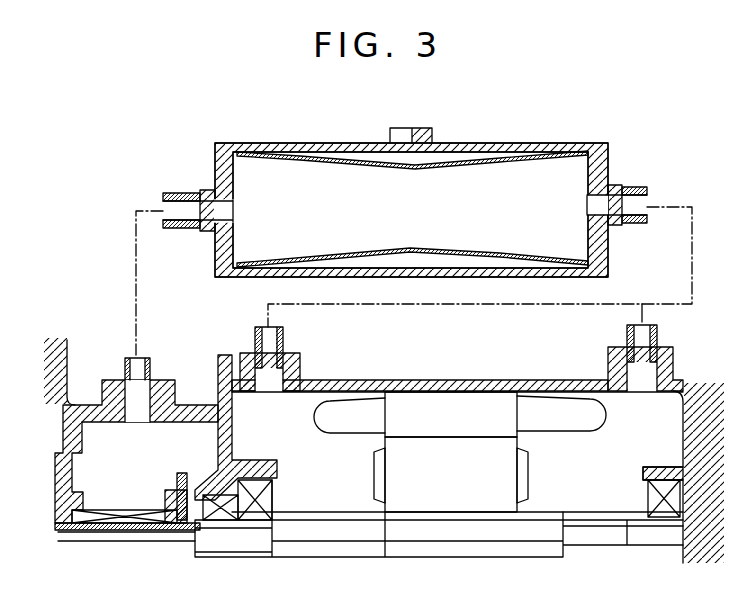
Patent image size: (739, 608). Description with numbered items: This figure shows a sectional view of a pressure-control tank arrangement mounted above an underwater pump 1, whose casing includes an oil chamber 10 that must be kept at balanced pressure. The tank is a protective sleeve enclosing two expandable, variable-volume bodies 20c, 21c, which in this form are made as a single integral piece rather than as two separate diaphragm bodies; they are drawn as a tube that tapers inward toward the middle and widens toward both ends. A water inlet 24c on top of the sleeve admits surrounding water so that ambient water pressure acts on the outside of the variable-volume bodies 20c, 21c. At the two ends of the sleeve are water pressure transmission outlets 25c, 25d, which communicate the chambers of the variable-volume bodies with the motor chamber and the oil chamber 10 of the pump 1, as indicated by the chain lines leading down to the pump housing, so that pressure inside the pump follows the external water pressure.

The underwater pump 1 is at (350, 484).
The oil chamber 10 is at (147, 486).
The variable-volume body 20c is at (300, 190).
The variable-volume body 21c is at (556, 151).
The water inlet 24c is at (418, 136).
The water pressure transmission outlet 25c is at (226, 205).
The water pressure transmission outlet 25d is at (630, 208).